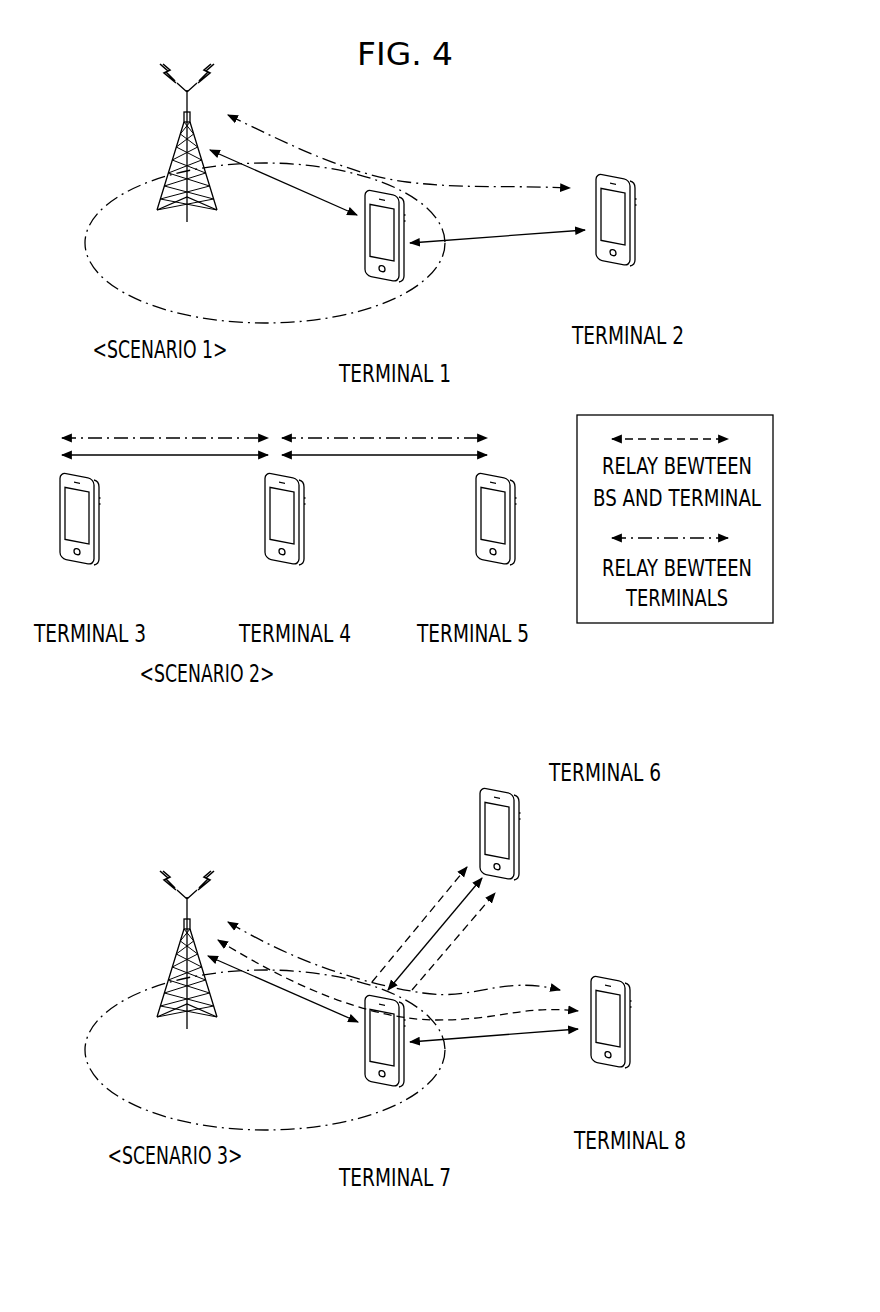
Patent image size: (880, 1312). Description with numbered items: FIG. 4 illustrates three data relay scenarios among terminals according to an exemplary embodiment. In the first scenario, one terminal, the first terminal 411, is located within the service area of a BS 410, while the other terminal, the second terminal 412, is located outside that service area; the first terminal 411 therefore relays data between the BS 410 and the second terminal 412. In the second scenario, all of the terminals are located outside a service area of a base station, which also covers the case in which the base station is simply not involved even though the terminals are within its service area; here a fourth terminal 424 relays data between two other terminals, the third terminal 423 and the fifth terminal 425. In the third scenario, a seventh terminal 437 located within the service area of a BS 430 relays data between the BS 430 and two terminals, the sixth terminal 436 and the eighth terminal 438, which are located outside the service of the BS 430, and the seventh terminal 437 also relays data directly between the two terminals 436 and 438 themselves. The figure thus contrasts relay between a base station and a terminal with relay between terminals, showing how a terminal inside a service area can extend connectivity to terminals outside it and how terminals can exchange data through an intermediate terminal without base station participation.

The BS 410 is at (177, 145).
The terminal 1 411 is at (392, 282).
The terminal 2 412 is at (625, 265).
The terminal 3 423 is at (88, 565).
The terminal 4 424 is at (293, 565).
The terminal 5 425 is at (505, 564).
The BS 430 is at (177, 953).
The terminal 6 436 is at (519, 800).
The terminal 7 437 is at (392, 1086).
The terminal 8 438 is at (620, 1067).